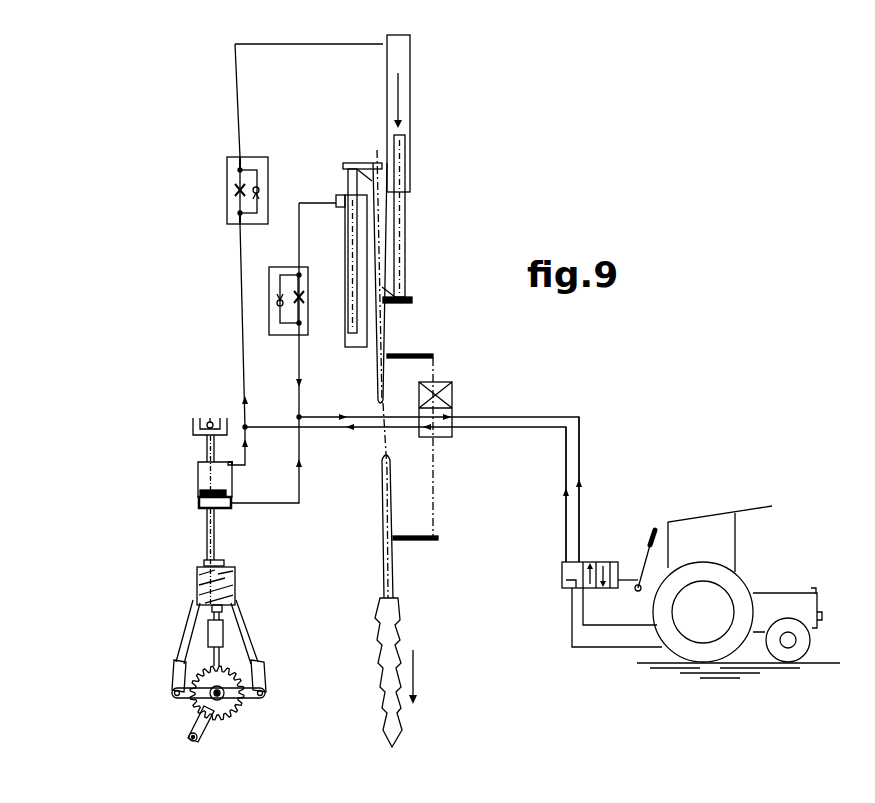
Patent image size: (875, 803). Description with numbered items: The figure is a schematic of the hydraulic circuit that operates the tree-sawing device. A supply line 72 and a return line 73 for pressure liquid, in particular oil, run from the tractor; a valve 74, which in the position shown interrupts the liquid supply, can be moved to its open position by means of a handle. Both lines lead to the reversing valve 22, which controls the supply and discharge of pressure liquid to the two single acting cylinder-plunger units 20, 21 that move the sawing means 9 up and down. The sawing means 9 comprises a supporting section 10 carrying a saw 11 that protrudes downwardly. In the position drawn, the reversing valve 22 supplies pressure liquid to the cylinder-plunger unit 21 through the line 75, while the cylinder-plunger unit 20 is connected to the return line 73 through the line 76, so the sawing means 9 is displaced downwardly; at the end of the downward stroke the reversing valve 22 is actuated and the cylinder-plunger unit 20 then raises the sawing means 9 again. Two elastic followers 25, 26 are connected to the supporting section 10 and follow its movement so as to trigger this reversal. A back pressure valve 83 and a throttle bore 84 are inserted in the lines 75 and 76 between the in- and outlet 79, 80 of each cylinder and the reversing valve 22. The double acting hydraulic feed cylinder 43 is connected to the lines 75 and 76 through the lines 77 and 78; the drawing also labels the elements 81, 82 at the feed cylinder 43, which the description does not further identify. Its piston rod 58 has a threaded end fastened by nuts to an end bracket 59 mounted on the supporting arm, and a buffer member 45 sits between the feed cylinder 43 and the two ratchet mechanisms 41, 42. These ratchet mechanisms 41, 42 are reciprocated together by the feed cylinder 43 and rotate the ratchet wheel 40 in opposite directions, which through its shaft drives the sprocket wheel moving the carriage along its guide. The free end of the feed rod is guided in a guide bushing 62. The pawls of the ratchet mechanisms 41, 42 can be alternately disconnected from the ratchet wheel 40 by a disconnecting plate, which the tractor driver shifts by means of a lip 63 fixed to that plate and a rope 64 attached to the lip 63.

The sawing means 9 is at (378, 573).
The supporting section 10 is at (390, 582).
The saw 11 is at (394, 618).
The cylinder-plunger unit 20 is at (345, 238).
The cylinder-plunger unit 21 is at (411, 88).
The reversing valve 22 is at (452, 403).
The elastic follower 25 is at (434, 357).
The elastic follower 26 is at (438, 535).
The ratchet wheel 40 is at (215, 680).
The ratchet mechanism 41 is at (269, 702).
The ratchet mechanism 42 is at (168, 702).
The hydraulic feed cylinder 43 is at (198, 476).
The buffer member 45 is at (197, 580).
The piston rod 58 is at (207, 447).
The end bracket 59 is at (193, 423).
The guide bushing 62 is at (208, 632).
The lip 63 is at (193, 736).
The rope 64 is at (222, 735).
The supply line 72 is at (565, 498).
The return line 73 is at (584, 498).
The valve 74 is at (562, 572).
The line 75 is at (240, 332).
The line 76 is at (318, 416).
The line 77 is at (252, 436).
The line 78 is at (304, 488).
The inlet/outlet 79 is at (337, 198).
The inlet/outlet 80 is at (383, 44).
The base plate 81 is at (233, 506).
The connection 82 is at (234, 466).
The back pressure valve 83 is at (253, 193).
The throttle bore 84 is at (236, 190).